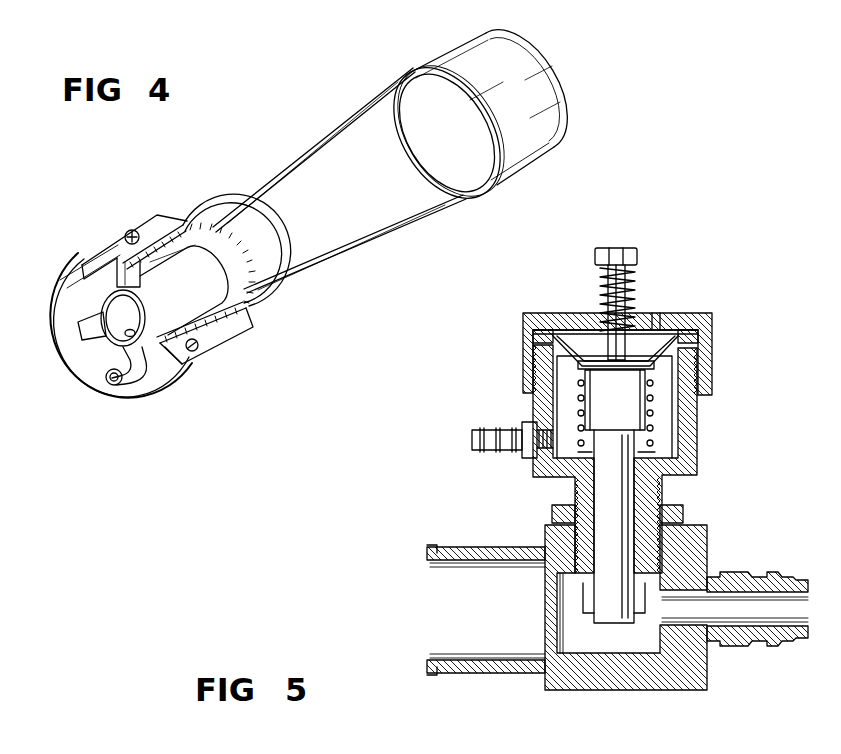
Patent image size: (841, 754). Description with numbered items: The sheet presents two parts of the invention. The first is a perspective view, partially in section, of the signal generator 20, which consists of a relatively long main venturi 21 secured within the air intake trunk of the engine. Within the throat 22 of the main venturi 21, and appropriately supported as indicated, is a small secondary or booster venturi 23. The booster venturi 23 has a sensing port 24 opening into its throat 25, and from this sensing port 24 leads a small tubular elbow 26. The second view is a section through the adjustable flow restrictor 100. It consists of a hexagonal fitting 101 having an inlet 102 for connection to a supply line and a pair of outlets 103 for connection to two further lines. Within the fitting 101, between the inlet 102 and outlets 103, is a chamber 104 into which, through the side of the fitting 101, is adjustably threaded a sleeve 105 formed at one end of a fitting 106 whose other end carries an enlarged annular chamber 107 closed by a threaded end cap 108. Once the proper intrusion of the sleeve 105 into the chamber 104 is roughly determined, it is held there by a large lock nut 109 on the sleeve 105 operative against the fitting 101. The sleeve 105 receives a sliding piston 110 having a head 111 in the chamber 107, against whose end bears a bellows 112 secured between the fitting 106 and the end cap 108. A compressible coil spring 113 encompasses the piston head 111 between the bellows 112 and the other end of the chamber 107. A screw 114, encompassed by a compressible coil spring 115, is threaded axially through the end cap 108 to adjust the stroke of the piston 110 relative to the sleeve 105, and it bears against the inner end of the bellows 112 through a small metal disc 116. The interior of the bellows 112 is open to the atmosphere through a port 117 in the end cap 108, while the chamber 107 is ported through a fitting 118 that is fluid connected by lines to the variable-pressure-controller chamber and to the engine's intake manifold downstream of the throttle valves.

In FIG. 4, the signal generator 20 is at (345, 71).
In FIG. 4, the main venturi 21 is at (340, 248).
In FIG. 4, the throat 22 is at (203, 228).
In FIG. 4, the booster venturi 23 is at (208, 283).
In FIG. 4, the sensing port 24 is at (128, 335).
In FIG. 4, the throat 25 is at (118, 310).
In FIG. 4, the tubular elbow 26 is at (123, 378).
In FIG. 5, the flow restrictor 100 is at (458, 412).
In FIG. 5, the hexagonal fitting 101 is at (708, 537).
In FIG. 5, the inlet 102 is at (432, 545).
In FIG. 5, the outlets 103 is at (780, 577).
In FIG. 5, the chamber 104 is at (600, 638).
In FIG. 5, the sleeve 105 is at (575, 532).
In FIG. 5, the fitting 106 is at (700, 464).
In FIG. 5, the annular chamber 107 is at (572, 396).
In FIG. 5, the end cap 108 is at (713, 332).
In FIG. 5, the lock nut 109 is at (684, 510).
In FIG. 5, the piston 110 is at (600, 482).
In FIG. 5, the head 111 is at (648, 404).
In FIG. 5, the bellows 112 is at (545, 352).
In FIG. 5, the coil spring 113 is at (658, 434).
In FIG. 5, the screw 114 is at (626, 250).
In FIG. 5, the coil spring 115 is at (638, 275).
In FIG. 5, the metal disc 116 is at (660, 356).
In FIG. 5, the port 117 is at (655, 320).
In FIG. 5, the fitting 118 is at (472, 442).